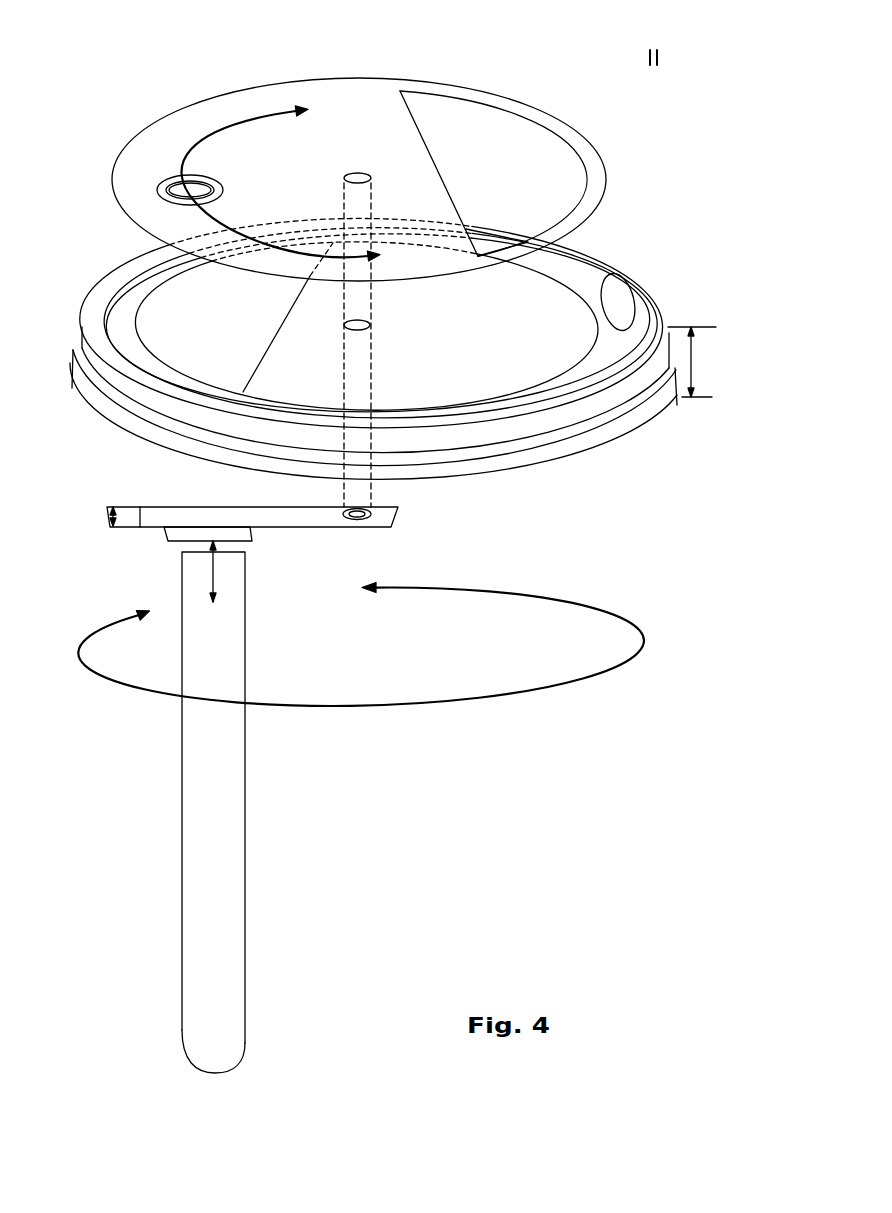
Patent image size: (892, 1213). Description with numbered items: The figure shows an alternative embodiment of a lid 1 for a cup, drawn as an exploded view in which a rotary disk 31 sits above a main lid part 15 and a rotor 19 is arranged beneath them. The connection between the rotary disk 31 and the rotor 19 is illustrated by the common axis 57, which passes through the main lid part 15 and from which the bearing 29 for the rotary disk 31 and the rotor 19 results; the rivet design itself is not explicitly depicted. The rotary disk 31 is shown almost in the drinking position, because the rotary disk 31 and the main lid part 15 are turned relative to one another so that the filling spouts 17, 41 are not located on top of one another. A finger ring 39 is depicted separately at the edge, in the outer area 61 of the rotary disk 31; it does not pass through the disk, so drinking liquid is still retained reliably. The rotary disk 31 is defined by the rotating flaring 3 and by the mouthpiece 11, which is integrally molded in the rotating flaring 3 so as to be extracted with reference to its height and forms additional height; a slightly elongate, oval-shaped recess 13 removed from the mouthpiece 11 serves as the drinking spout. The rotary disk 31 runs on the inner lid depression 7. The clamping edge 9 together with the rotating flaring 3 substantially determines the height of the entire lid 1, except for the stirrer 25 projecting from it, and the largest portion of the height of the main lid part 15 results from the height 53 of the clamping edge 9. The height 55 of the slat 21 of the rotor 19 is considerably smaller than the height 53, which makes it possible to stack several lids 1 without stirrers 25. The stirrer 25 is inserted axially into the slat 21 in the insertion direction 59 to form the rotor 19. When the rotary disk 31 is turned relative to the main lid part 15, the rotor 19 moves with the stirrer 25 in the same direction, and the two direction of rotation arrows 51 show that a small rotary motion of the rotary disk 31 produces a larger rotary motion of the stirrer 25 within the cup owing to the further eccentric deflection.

The lid 1 is at (121, 99).
The rotating flaring 3 is at (93, 325).
The inner lid depression 7 is at (520, 373).
The clamping edge 9 is at (130, 416).
The mouthpiece 11 is at (577, 263).
The recess (drinking spout) 13 is at (622, 300).
The main lid part 15 is at (497, 442).
The filling spout 17 is at (175, 303).
The rotor 19 is at (227, 618).
The slat 21 is at (390, 523).
The stirrer 25 is at (230, 950).
The bearing 29 is at (357, 173).
The rotary disk 31 is at (313, 93).
The finger ring 39 is at (158, 188).
The filling spout 41 is at (528, 160).
The direction of rotation arrows 51 is at (226, 127).
The height of the clamping edge 53 is at (695, 362).
The height of the slat 55 is at (106, 509).
The common axis 57 is at (357, 485).
The insertion direction 59 is at (212, 573).
The outer area of the rotary disk 61 is at (182, 127).